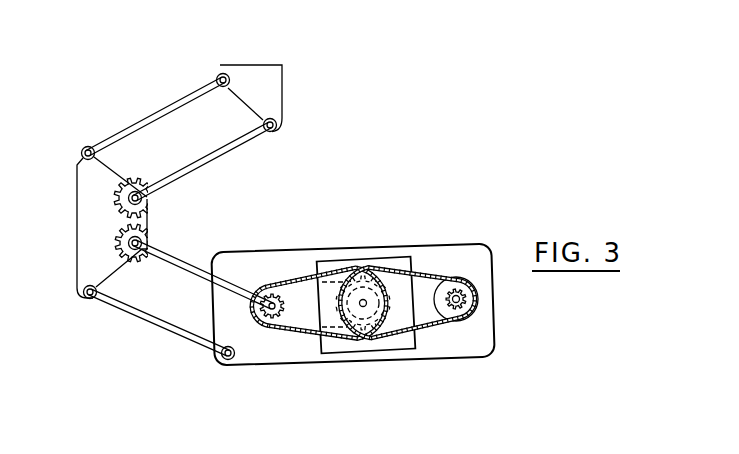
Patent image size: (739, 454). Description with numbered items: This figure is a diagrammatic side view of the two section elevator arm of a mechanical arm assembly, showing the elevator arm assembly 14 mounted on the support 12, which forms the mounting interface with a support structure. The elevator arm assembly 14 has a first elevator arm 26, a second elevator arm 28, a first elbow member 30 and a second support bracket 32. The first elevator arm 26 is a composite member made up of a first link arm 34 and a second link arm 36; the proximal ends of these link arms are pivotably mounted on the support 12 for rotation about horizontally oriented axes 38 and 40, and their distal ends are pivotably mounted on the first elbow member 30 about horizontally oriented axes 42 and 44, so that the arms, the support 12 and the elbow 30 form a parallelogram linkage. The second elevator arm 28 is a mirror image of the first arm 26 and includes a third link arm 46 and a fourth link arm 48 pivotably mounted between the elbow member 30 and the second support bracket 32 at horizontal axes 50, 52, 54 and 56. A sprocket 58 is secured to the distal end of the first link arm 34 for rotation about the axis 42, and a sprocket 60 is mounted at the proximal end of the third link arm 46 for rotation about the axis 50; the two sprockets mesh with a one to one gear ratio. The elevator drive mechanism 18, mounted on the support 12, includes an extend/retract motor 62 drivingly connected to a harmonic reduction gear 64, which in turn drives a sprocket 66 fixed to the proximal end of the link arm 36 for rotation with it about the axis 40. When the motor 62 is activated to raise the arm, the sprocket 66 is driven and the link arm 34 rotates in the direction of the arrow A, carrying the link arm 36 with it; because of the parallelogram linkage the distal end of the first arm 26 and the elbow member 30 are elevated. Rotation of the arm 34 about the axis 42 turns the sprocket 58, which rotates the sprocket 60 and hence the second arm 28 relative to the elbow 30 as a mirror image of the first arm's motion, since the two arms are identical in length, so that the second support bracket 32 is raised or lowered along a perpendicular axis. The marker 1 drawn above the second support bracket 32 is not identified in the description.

The section indicator 1 is at (268, 65).
The support 12 is at (267, 352).
The elevator arm assembly 14 is at (186, 162).
The elevator drive mechanism 18 is at (376, 315).
The first elevator arm 26 is at (169, 317).
The second elevator arm 28 is at (154, 103).
The first elbow member 30 is at (70, 217).
The second support bracket 32 is at (293, 85).
The first link arm 34 is at (190, 274).
The second link arm 36 is at (183, 340).
The horizontally oriented axis 38 is at (272, 293).
The horizontally oriented axis 40 is at (228, 362).
The horizontally oriented axis 42 is at (143, 242).
The horizontally oriented axis 44 is at (97, 300).
The third link arm 46 is at (230, 152).
The fourth link arm 48 is at (181, 110).
The horizontal axis 50 is at (148, 197).
The horizontal axis 52 is at (87, 145).
The horizontal axis 54 is at (280, 133).
The horizontal axis 56 is at (222, 73).
The sprocket 58 is at (120, 252).
The sprocket 60 is at (113, 198).
The extend/retract motor 62 is at (458, 322).
The harmonic reduction gear 64 is at (397, 262).
The sprocket 66 is at (282, 313).
The arrow A is at (248, 286).